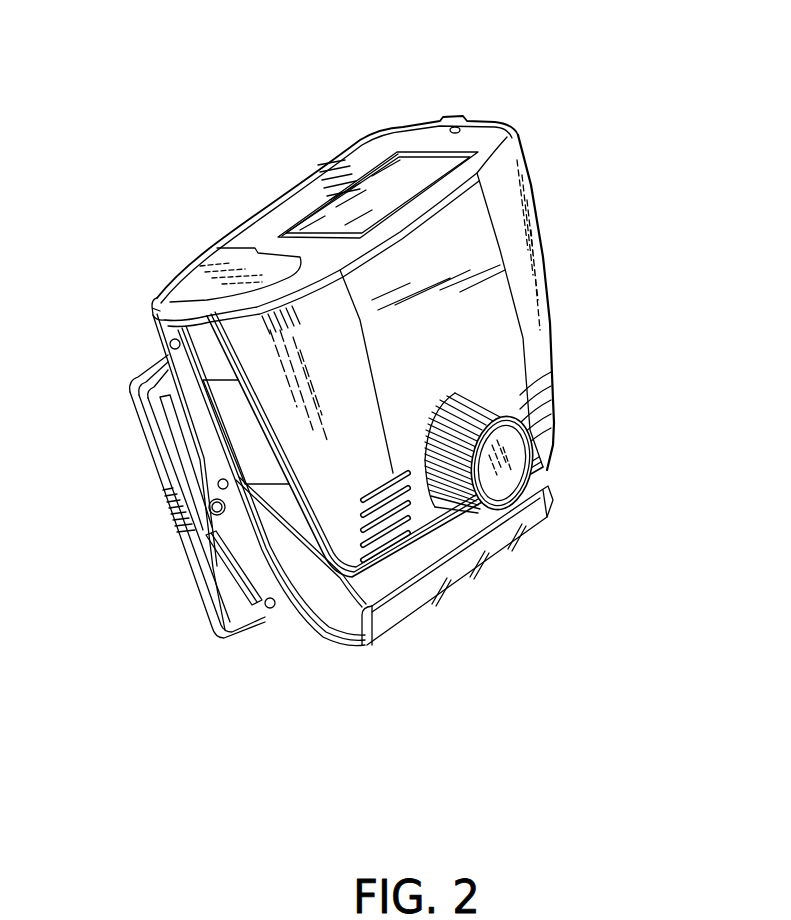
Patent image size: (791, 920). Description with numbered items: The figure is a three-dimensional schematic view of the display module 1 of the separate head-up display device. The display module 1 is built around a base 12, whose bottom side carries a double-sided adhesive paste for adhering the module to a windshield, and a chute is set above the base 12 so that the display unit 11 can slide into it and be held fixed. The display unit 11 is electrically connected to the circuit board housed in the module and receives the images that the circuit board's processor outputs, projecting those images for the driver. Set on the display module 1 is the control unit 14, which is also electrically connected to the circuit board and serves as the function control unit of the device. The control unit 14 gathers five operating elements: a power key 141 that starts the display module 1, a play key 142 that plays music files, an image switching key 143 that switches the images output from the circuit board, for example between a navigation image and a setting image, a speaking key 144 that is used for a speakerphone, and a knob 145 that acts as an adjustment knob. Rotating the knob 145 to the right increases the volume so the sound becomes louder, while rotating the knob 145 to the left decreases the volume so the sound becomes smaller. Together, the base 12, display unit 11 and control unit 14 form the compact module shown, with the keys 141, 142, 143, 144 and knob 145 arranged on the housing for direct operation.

The display module 1 is at (540, 253).
The display unit 11 is at (409, 175).
The base 12 is at (170, 513).
The control unit 14 is at (537, 578).
The power key 141 is at (420, 588).
The play key 142 is at (453, 562).
The image switching key 143 is at (490, 535).
The speaking key 144 is at (537, 510).
The knob 145 is at (517, 457).